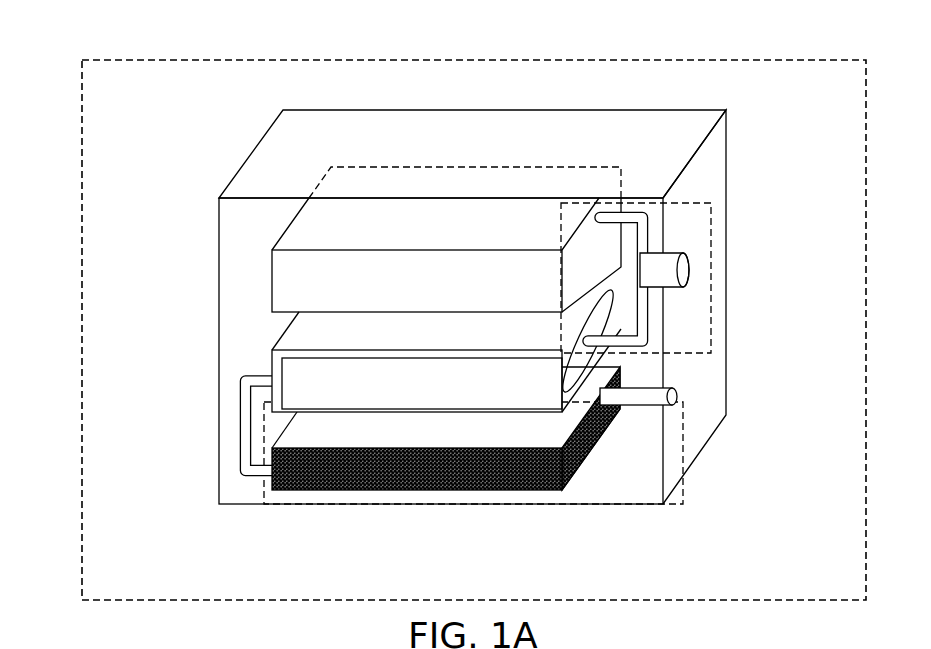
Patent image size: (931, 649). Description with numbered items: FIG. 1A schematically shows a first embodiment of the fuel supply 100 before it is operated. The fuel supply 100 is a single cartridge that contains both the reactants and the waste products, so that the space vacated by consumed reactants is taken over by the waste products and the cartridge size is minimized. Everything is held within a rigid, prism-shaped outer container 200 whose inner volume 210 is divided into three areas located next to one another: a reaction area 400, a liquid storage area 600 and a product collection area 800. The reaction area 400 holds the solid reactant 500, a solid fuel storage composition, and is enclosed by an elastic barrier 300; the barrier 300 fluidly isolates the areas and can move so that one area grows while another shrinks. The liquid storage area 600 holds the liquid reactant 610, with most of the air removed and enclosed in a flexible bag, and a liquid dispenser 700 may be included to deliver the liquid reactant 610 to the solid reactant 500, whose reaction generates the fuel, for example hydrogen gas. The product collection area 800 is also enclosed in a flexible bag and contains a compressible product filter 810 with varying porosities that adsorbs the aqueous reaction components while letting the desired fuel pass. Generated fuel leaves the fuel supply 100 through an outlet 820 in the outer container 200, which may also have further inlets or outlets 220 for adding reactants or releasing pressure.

The fuel supply 100 is at (138, 26).
The outer container 200 is at (441, 258).
The inner volume 210 is at (233, 264).
The outlet 220 is at (683, 397).
The barrier 300 is at (388, 217).
The reaction area 400 is at (268, 369).
The solid reactant 500 is at (437, 389).
The liquid storage area 600 is at (446, 217).
The liquid reactant 610 is at (437, 295).
The liquid dispenser 700 is at (711, 222).
The product collection area 800 is at (243, 505).
The product filter 810 is at (407, 472).
The outlet 820 is at (697, 417).